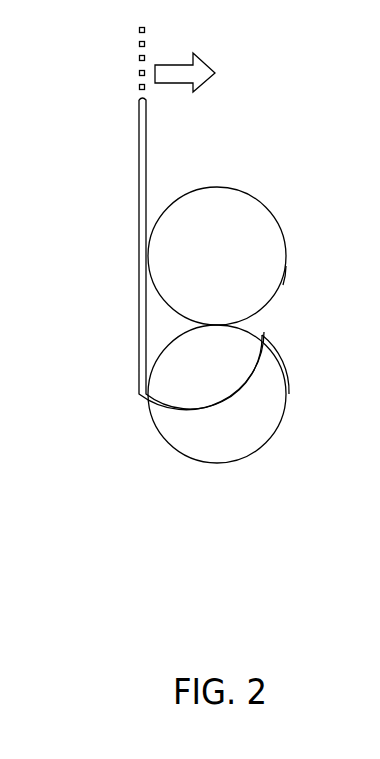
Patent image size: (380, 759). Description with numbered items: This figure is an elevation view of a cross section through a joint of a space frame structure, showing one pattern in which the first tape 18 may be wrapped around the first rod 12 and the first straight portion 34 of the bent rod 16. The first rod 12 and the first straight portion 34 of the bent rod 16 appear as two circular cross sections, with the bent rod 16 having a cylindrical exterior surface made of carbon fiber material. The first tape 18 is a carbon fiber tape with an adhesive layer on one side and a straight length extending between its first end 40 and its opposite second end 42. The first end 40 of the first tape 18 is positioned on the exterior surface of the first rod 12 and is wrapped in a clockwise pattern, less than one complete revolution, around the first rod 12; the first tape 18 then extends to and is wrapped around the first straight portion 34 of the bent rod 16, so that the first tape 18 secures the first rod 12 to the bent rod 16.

The first rod 12 is at (160, 355).
The bent rod 16 is at (285, 247).
The first tape 18 is at (140, 382).
The first straight portion 34 is at (285, 277).
The first end 40 is at (265, 335).
The second end 42 is at (131, 84).